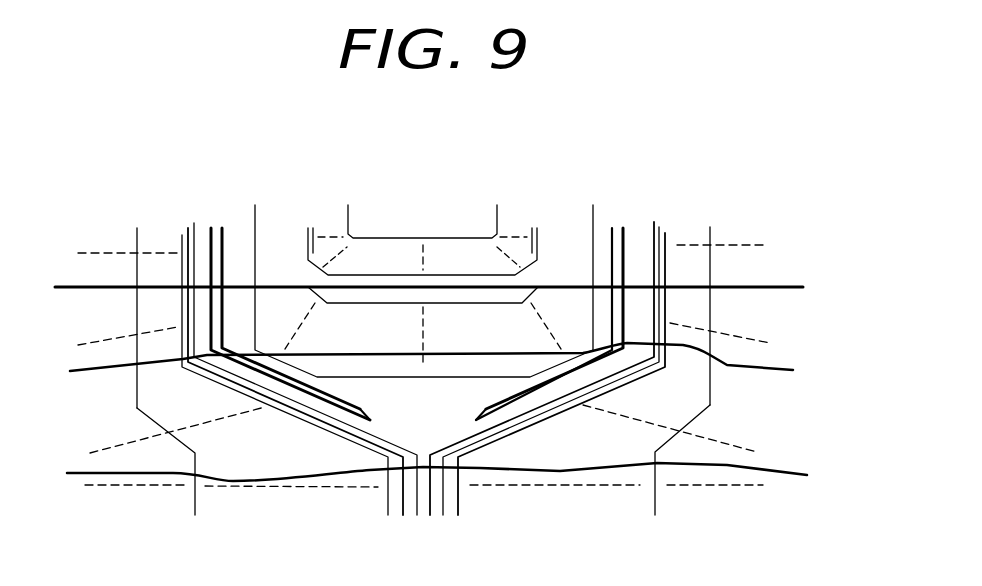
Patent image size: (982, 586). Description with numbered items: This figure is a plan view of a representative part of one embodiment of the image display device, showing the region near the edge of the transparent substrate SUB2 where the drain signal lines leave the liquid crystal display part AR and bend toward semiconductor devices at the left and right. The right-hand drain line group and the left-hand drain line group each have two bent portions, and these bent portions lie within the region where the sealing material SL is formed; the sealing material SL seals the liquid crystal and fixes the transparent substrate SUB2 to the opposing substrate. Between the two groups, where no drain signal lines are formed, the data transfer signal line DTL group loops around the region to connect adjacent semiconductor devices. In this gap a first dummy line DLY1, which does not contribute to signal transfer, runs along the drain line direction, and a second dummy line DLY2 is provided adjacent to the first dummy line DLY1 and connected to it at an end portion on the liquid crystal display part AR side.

The first dummy line DLY1 is at (217, 228).
The second dummy line DLY2 is at (225, 243).
The data transfer signal line DTL is at (348, 210).
The transparent substrate SUB2 is at (743, 287).
The sealing material SL is at (792, 370).
The liquid crystal display part AR is at (872, 443).